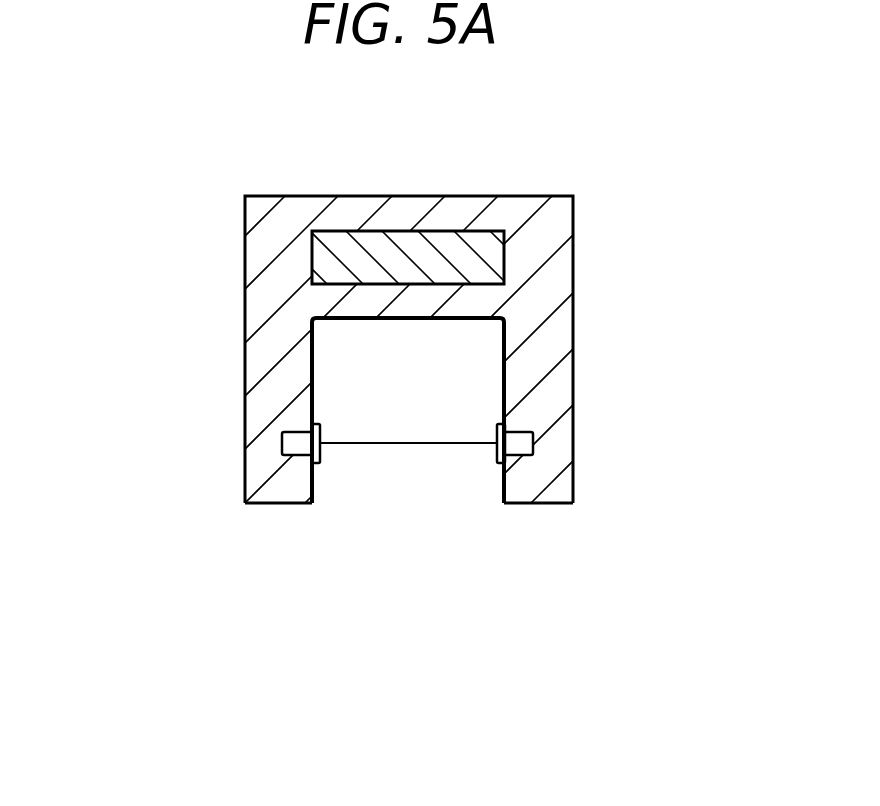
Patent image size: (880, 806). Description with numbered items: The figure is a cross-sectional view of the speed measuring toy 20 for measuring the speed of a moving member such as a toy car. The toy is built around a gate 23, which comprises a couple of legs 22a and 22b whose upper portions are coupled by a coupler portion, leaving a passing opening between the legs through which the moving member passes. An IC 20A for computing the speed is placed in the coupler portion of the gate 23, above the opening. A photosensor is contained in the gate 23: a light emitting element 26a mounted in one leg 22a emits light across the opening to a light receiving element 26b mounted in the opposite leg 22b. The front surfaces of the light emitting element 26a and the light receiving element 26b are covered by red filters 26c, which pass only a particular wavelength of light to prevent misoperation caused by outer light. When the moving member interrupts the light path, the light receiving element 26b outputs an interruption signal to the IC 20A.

The speed measuring toy 20 is at (419, 284).
The IC 20A is at (372, 231).
The gate 23 is at (230, 242).
The leg 22a is at (257, 459).
The leg 22b is at (557, 472).
The light emitting element 26a is at (297, 452).
The light receiving element 26b is at (523, 450).
The red filter 26c is at (494, 459).